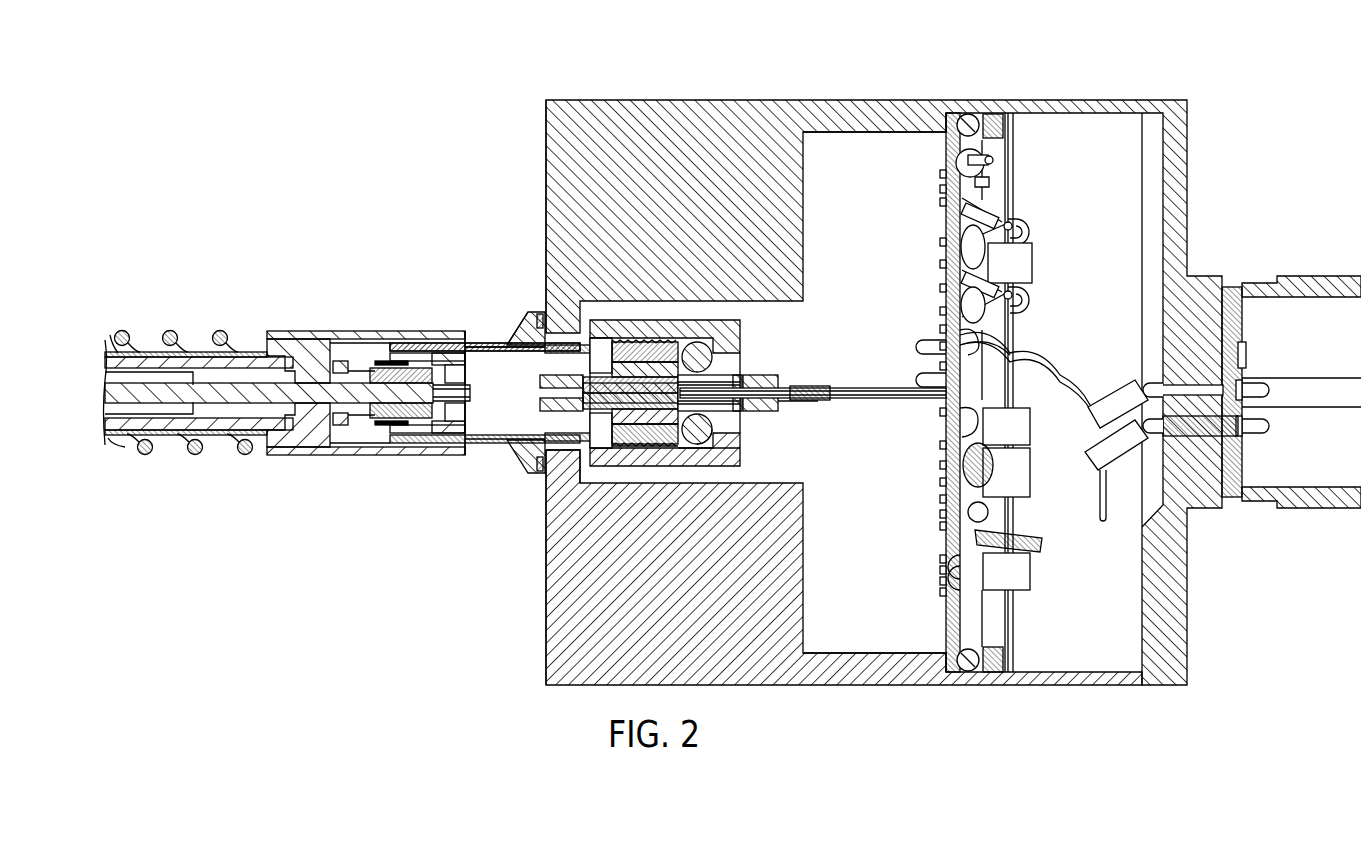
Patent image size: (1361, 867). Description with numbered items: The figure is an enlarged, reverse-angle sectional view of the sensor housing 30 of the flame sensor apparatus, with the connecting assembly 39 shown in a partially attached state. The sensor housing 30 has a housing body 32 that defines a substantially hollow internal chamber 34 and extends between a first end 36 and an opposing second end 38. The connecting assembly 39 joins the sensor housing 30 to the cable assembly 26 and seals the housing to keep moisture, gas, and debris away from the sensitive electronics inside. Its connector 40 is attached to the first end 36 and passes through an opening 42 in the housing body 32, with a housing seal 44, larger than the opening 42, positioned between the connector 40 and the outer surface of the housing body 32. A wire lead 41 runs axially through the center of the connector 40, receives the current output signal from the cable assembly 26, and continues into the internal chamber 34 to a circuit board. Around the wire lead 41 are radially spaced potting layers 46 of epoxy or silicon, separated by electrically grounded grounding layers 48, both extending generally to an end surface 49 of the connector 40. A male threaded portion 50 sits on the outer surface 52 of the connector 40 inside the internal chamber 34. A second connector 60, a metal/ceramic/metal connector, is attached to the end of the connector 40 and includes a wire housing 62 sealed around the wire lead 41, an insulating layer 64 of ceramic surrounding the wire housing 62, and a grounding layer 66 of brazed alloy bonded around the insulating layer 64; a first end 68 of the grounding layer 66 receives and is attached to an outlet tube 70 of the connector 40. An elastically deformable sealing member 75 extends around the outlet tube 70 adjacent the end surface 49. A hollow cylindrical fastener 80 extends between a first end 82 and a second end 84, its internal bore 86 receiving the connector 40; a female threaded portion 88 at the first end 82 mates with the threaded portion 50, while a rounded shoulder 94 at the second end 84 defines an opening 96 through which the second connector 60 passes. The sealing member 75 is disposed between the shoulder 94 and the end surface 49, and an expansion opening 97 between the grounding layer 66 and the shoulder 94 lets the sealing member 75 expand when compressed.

The cable assembly 26 is at (306, 330).
The sensor housing 30 is at (928, 350).
The housing body 32 is at (679, 107).
The internal chamber 34 is at (857, 157).
The first end 36 is at (546, 138).
The second end 38 is at (1187, 162).
The connecting assembly 39 is at (495, 462).
The connector 40 is at (540, 350).
The wire lead 41 is at (655, 395).
The opening 42 is at (545, 472).
The housing seal 44 is at (530, 333).
The potting layers 46 is at (525, 343).
The grounding layers 48 is at (590, 350).
The end surface 49 is at (712, 418).
The threaded portion 50 is at (602, 333).
The outer surface 52 is at (585, 330).
The second connector 60 is at (743, 396).
The wire housing 62 is at (820, 386).
The insulating layer 64 is at (790, 385).
The grounding layer 66 is at (760, 378).
The first end 68 is at (703, 350).
The outlet tube 70 is at (688, 370).
The sealing member 75 is at (700, 436).
The fastener 80 is at (742, 438).
The first end 82 is at (578, 480).
The second end 84 is at (745, 453).
The internal bore 86 is at (662, 450).
The threaded portion 88 is at (613, 462).
The shoulder 94 is at (702, 428).
The opening 96 is at (745, 423).
The expansion opening 97 is at (785, 399).